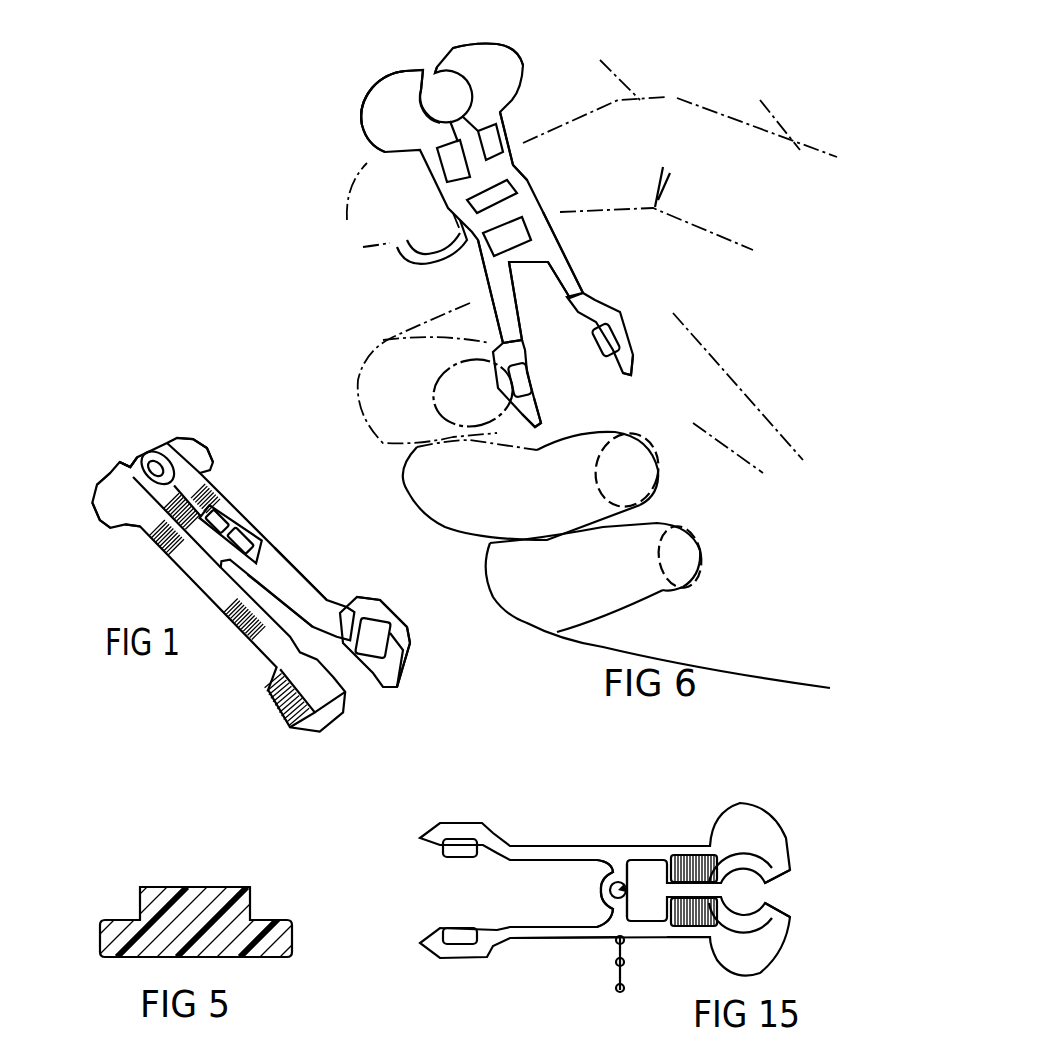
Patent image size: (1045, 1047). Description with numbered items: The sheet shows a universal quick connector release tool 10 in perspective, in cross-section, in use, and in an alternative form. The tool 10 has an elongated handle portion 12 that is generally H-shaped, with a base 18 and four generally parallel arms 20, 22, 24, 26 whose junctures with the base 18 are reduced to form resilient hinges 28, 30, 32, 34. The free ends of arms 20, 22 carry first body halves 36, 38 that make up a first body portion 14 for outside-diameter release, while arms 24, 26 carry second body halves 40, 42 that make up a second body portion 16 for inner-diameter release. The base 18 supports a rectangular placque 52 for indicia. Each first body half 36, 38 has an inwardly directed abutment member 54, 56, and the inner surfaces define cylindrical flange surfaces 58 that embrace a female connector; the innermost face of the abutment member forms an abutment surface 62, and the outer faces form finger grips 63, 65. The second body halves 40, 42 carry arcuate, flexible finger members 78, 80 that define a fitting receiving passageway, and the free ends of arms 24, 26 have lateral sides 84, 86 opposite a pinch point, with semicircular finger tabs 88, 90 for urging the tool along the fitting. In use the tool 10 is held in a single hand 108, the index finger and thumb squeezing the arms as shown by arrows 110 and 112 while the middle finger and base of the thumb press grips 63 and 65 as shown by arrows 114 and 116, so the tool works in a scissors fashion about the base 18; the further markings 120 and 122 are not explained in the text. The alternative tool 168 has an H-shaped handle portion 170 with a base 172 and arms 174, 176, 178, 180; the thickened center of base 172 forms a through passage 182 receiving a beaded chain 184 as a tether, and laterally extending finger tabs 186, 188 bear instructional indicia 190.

In FIG. 6, the universal quick connector O.D. release tool 10 is at (345, 118).
In FIG. 1, the universal quick connector O.D. release tool 10 is at (112, 446).
In FIG. 1, the elongated handle portion 12 is at (185, 592).
In FIG. 6, the first body portion 14 is at (622, 393).
In FIG. 1, the first body portion 14 is at (374, 699).
In FIG. 6, the second body portion 16 is at (418, 48).
In FIG. 1, the second body portion 16 is at (124, 426).
In FIG. 1, the base 18 is at (259, 522).
In FIG. 6, the arm 20 is at (503, 310).
In FIG. 1, the arm 20 is at (317, 583).
In FIG. 6, the arm 22 is at (581, 281).
In FIG. 1, the arm 22 is at (260, 633).
In FIG. 6, the arm 24 is at (437, 170).
In FIG. 1, the arm 24 is at (238, 503).
In FIG. 6, the arm 26 is at (522, 140).
In FIG. 1, the arm 26 is at (183, 558).
In FIG. 6, the resilient hinge 28 is at (466, 243).
In FIG. 6, the resilient hinge 30 is at (545, 210).
In FIG. 6, the resilient hinge 32 is at (410, 250).
In FIG. 6, the resilient hinge 34 is at (528, 181).
In FIG. 6, the first body half 36 is at (540, 410).
In FIG. 1, the first body half 36 is at (410, 640).
In FIG. 5, the first body half 36 is at (123, 958).
In FIG. 6, the first body half 38 is at (640, 367).
In FIG. 1, the first body half 38 is at (317, 727).
In FIG. 6, the second body half 40 is at (400, 77).
In FIG. 1, the second body half 40 is at (160, 452).
In FIG. 6, the second body half 42 is at (463, 60).
In FIG. 1, the second body half 42 is at (120, 466).
In FIG. 6, the placque 52 is at (511, 243).
In FIG. 1, the placque 52 is at (280, 567).
In FIG. 1, the abutment member 54 is at (373, 623).
In FIG. 5, the abutment member 54 is at (188, 913).
In FIG. 1, the abutment member 56 is at (273, 687).
In FIG. 1, the cylindrical flange surface 58 is at (403, 650).
In FIG. 5, the cylindrical flange surface 58 is at (117, 920).
In FIG. 1, the abutment surface 62 is at (377, 633).
In FIG. 5, the abutment surface 62 is at (182, 887).
In FIG. 6, the finger grip 63 is at (637, 340).
In FIG. 5, the finger grip 63 is at (263, 958).
In FIG. 6, the finger grip 65 is at (537, 383).
In FIG. 6, the finger member 78 is at (417, 95).
In FIG. 1, the finger member 78 is at (150, 462).
In FIG. 6, the finger member 80 is at (478, 78).
In FIG. 1, the finger member 80 is at (137, 530).
In FIG. 1, the lateral side 84 is at (215, 487).
In FIG. 1, the lateral side 86 is at (118, 484).
In FIG. 6, the finger tab 88 is at (370, 128).
In FIG. 1, the finger tab 88 is at (203, 447).
In FIG. 6, the finger tab 90 is at (510, 63).
In FIG. 1, the finger tab 90 is at (100, 513).
In FIG. 6, the human hand 108 is at (777, 353).
In FIG. 6, the arrow 110 is at (436, 202).
In FIG. 6, the arrow 112 is at (530, 162).
In FIG. 6, the arrow 114 is at (498, 388).
In FIG. 6, the arrow 116 is at (633, 327).
In FIG. 6, the hand part 120 is at (438, 50).
In FIG. 6, the hand part 122 is at (806, 75).
In FIG. 15, the universal O.D.-I.D. quick connect release tool 168 is at (490, 977).
In FIG. 15, the handle portion 170 is at (620, 832).
In FIG. 15, the base 172 is at (610, 868).
In FIG. 15, the arm 174 is at (530, 938).
In FIG. 15, the arm 176 is at (540, 846).
In FIG. 15, the arm 178 is at (650, 935).
In FIG. 15, the arm 180 is at (657, 857).
In FIG. 15, the through passage 182 is at (610, 890).
In FIG. 15, the beaded chain 184 is at (613, 977).
In FIG. 15, the finger tab 186 is at (770, 830).
In FIG. 15, the finger tab 188 is at (770, 950).
In FIG. 15, the instructional indicia 190 is at (753, 807).